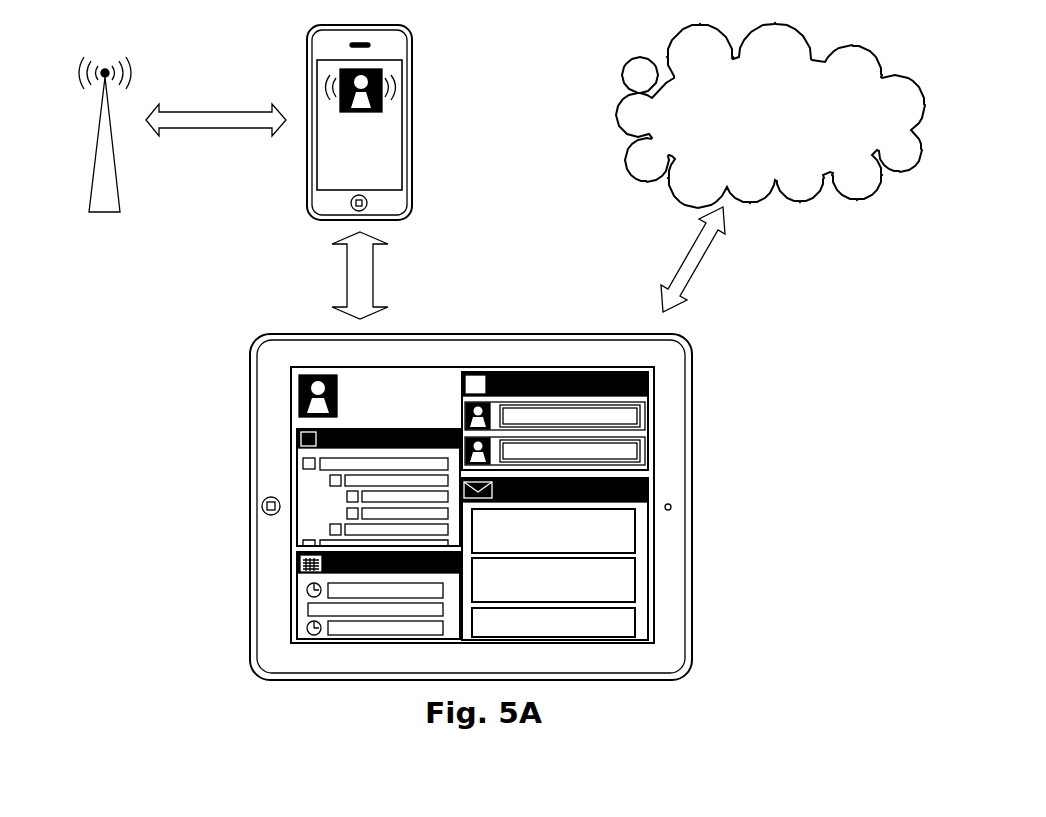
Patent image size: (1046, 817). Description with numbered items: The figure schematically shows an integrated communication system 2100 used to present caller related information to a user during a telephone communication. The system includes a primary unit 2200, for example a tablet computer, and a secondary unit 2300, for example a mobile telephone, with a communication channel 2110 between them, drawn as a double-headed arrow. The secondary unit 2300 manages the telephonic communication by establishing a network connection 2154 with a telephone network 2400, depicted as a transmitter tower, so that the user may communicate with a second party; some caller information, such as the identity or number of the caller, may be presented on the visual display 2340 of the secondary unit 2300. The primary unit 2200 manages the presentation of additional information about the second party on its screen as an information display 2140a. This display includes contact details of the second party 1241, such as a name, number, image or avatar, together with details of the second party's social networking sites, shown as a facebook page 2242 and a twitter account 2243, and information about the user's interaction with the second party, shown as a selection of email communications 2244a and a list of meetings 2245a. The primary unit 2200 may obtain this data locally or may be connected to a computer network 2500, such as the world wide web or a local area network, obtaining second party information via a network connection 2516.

The integrated communication system 2100 is at (745, 655).
The communication channel 2110 is at (373, 261).
The information display 2140a is at (415, 511).
The network connection 2154 is at (232, 112).
The primary unit 2200 is at (693, 465).
The facebook page 2242 is at (297, 490).
The twitter account 2243 is at (648, 388).
The selection of email communications 2244a is at (643, 545).
The list of meetings 2245a is at (297, 617).
The contact details of the second party 1241 is at (297, 407).
The secondary unit 2300 is at (397, 122).
The visual display 2340 is at (378, 156).
The telephone network 2400 is at (108, 198).
The computer network 2500 is at (640, 78).
The network connection 2516 is at (685, 272).